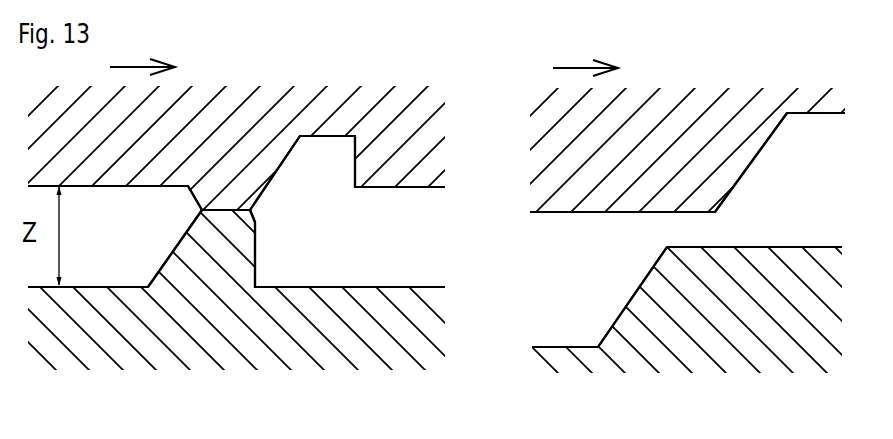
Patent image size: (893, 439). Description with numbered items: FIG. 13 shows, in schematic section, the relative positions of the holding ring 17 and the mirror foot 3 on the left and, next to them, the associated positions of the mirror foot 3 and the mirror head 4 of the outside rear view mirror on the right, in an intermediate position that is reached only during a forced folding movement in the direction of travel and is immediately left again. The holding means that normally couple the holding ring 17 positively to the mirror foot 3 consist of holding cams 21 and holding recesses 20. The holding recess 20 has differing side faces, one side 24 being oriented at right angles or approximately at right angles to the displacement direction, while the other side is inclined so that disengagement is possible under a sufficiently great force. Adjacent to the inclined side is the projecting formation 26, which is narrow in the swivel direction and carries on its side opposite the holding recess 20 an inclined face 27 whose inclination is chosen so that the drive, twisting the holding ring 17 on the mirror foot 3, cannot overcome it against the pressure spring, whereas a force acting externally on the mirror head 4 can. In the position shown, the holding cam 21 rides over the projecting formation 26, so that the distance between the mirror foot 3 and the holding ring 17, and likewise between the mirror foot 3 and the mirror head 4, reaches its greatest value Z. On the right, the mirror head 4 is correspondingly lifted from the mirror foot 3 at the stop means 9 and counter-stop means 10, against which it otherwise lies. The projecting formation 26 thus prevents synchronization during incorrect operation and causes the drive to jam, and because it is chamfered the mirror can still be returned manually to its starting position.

The holding ring 17 is at (156, 128).
The projecting formation 26 is at (230, 195).
The holding recess 20 is at (323, 153).
The side of holding recess 24 is at (356, 157).
The holding cam 21 is at (223, 244).
The inclined face 27 is at (163, 215).
The mirror foot 3 is at (193, 335).
The mirror head 4 is at (653, 135).
The counter-stop means 10 is at (750, 172).
The stop means 9 is at (628, 296).